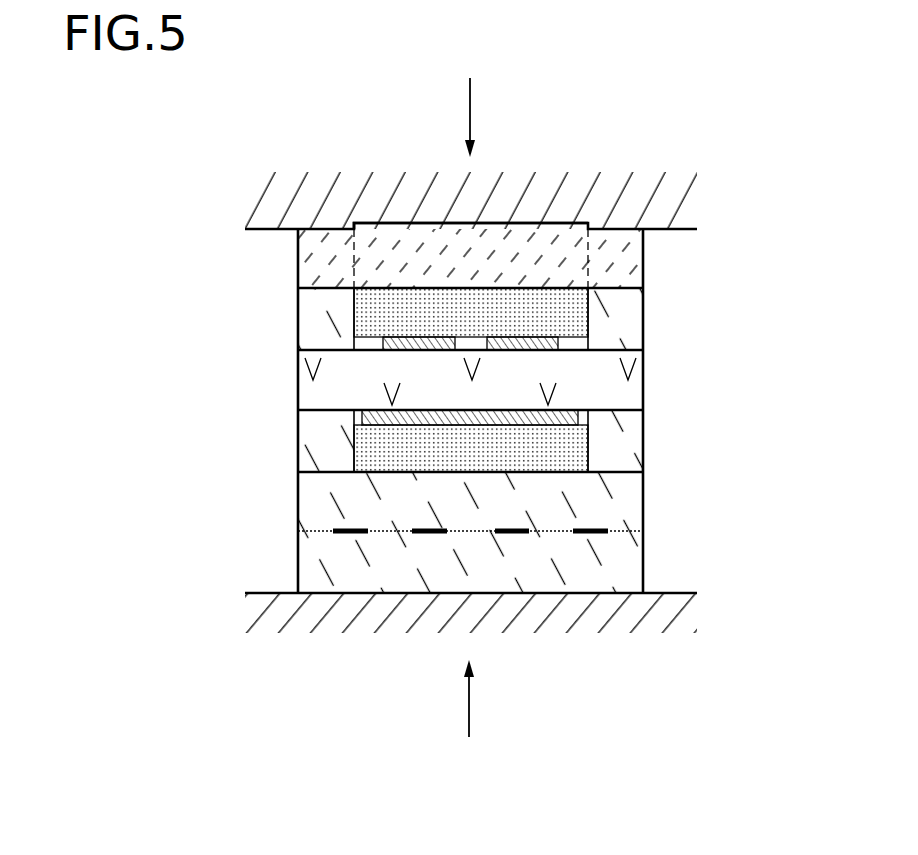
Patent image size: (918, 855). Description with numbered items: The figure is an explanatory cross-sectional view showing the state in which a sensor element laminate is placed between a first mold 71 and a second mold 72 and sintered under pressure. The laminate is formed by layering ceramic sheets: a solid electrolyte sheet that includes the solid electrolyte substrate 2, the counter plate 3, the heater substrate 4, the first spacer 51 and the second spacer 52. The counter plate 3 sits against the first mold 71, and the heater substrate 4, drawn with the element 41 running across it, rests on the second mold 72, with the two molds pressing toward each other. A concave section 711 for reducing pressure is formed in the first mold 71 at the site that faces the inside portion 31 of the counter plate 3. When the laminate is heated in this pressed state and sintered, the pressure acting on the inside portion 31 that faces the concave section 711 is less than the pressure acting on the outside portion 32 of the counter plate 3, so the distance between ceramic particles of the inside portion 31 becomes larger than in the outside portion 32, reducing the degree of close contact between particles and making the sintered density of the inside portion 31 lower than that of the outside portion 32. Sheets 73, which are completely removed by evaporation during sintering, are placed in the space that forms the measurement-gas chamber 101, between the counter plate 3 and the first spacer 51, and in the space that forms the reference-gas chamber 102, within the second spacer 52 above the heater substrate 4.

The first mold 71 is at (371, 185).
The concave section 711 is at (372, 232).
The second mold 72 is at (363, 620).
The sheets 73 is at (361, 383).
The measurement-gas chamber 101 is at (361, 319).
The reference-gas chamber 102 is at (361, 452).
The counter plate 3 is at (492, 157).
The inside portion 31 is at (548, 238).
The outside portion 32 is at (615, 238).
The first spacer 51 is at (603, 333).
The solid electrolyte substrate 2 is at (603, 395).
The second spacer 52 is at (603, 452).
The heater substrate 4 is at (603, 495).
The conductive pattern 41 is at (592, 533).